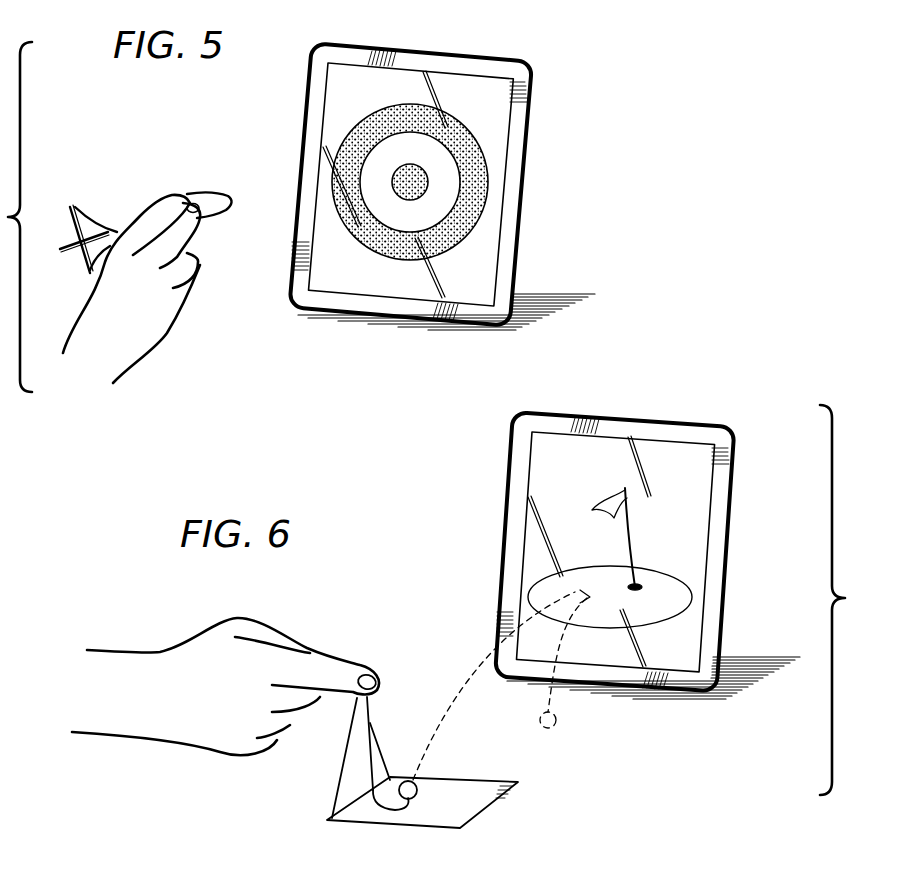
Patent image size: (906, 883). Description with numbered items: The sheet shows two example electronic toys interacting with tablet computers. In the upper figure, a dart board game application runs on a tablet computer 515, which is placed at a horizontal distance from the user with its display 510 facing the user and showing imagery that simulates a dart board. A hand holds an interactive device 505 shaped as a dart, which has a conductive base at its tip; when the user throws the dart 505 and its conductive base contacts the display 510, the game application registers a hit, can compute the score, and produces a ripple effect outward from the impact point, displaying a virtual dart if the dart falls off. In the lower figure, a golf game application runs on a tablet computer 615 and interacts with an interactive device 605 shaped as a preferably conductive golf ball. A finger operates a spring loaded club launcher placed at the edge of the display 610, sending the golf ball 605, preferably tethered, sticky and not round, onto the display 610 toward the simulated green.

In FIG. 5, the interactive device shaped as a dart 505 is at (205, 193).
In FIG. 5, the display 510 is at (345, 105).
In FIG. 5, the tablet computer 515 is at (322, 318).
In FIG. 6, the interactive device shaped as a golf ball 605 is at (415, 785).
In FIG. 6, the display 610 is at (548, 472).
In FIG. 6, the tablet computer 615 is at (733, 502).